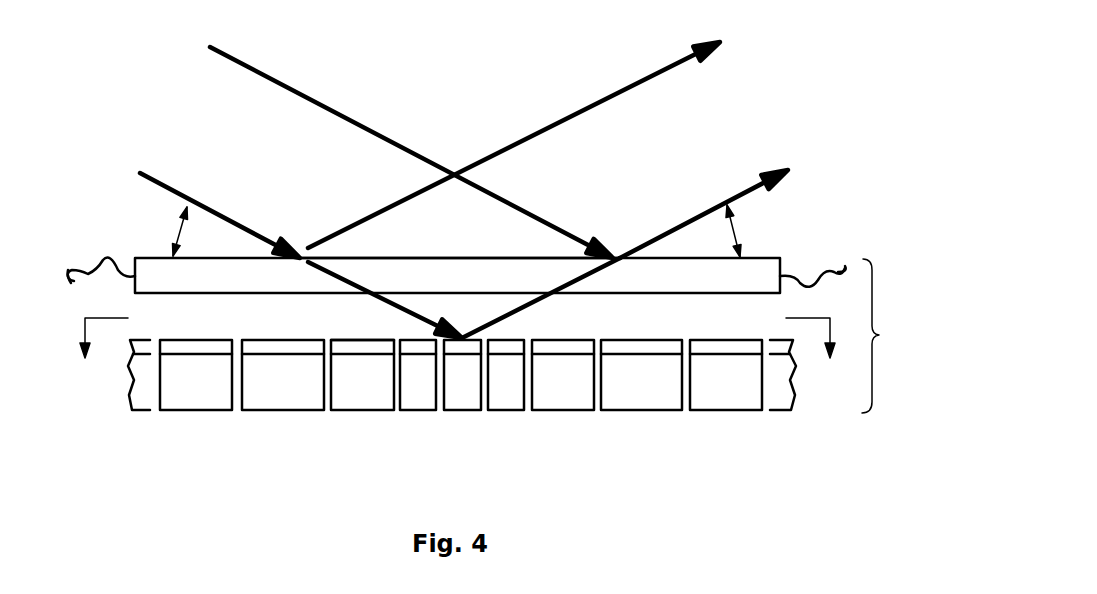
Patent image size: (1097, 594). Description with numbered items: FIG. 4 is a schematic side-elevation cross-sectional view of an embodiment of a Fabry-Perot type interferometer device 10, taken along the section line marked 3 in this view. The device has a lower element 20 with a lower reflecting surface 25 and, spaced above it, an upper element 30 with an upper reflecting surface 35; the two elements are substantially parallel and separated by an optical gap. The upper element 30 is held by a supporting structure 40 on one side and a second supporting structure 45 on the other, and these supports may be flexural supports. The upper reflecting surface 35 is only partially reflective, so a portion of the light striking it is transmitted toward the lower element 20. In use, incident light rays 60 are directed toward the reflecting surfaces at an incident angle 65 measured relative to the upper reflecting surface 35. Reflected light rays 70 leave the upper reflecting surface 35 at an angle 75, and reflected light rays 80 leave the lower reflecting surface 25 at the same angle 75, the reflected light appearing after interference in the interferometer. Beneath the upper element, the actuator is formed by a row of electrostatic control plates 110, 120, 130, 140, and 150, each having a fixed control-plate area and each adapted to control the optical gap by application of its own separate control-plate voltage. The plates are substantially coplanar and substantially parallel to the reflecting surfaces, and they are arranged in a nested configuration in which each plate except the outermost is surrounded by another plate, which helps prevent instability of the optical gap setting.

The interferometer device 10 is at (902, 335).
The lower element 20 is at (665, 350).
The lower reflecting surface 25 is at (361, 338).
The upper element 30 is at (460, 272).
The upper reflecting surface 35 is at (495, 257).
The supporting structure 40 is at (106, 261).
The second supporting structure 45 is at (835, 268).
The incident light rays 60 is at (303, 95).
The incident angle 65 is at (173, 227).
The reflected light rays 70 is at (622, 85).
The angle 75 is at (743, 230).
The reflected light rays 80 is at (710, 207).
The electrostatic control plate 110 is at (463, 397).
The electrostatic control plate 120 is at (415, 393).
The electrostatic control plate 130 is at (380, 395).
The electrostatic control plate 140 is at (260, 392).
The electrostatic control plate 150 is at (226, 393).
The section line 3- 3 is at (456, 349).